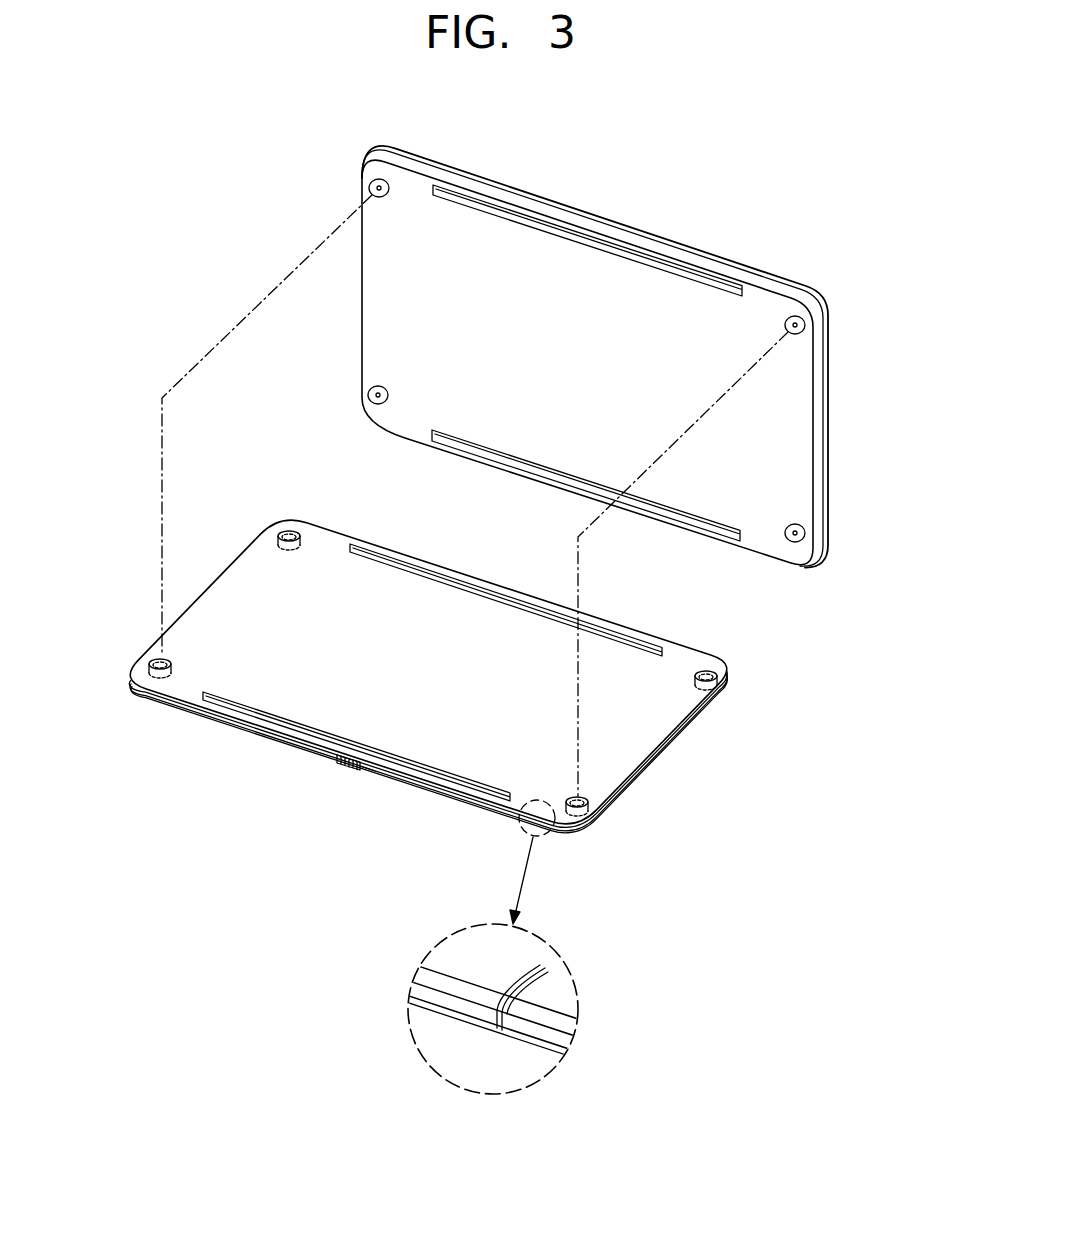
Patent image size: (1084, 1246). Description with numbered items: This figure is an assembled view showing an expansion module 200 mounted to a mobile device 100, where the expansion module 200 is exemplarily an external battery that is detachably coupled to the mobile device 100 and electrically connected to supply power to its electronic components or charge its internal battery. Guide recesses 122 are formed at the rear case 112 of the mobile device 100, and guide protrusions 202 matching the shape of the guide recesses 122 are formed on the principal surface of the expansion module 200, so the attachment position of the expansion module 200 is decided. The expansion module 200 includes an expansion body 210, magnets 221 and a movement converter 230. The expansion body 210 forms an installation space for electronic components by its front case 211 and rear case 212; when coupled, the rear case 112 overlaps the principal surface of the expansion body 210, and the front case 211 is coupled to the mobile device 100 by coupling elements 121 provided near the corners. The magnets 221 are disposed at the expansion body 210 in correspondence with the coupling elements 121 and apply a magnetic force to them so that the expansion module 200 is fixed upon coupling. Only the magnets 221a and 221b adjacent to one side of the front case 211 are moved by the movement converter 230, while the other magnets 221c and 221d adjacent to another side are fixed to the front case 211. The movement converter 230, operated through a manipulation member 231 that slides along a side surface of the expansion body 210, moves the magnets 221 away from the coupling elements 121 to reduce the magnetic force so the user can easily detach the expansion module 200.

The mobile device 100 is at (634, 382).
The rear case 112 is at (821, 366).
The coupling element 121 is at (795, 545).
The guide recess 122 is at (708, 280).
The expansion module 200 is at (453, 759).
The guide protrusion 202 is at (470, 800).
The expansion body 210 is at (428, 882).
The front case 211 is at (428, 748).
The rear case 212 is at (428, 753).
The magnet 221 is at (453, 672).
The magnet 221a is at (163, 682).
The magnet 221b is at (577, 815).
The magnet 221c is at (289, 527).
The magnet 221d is at (727, 690).
The movement converter 230 is at (312, 814).
The manipulation member 231 is at (338, 764).